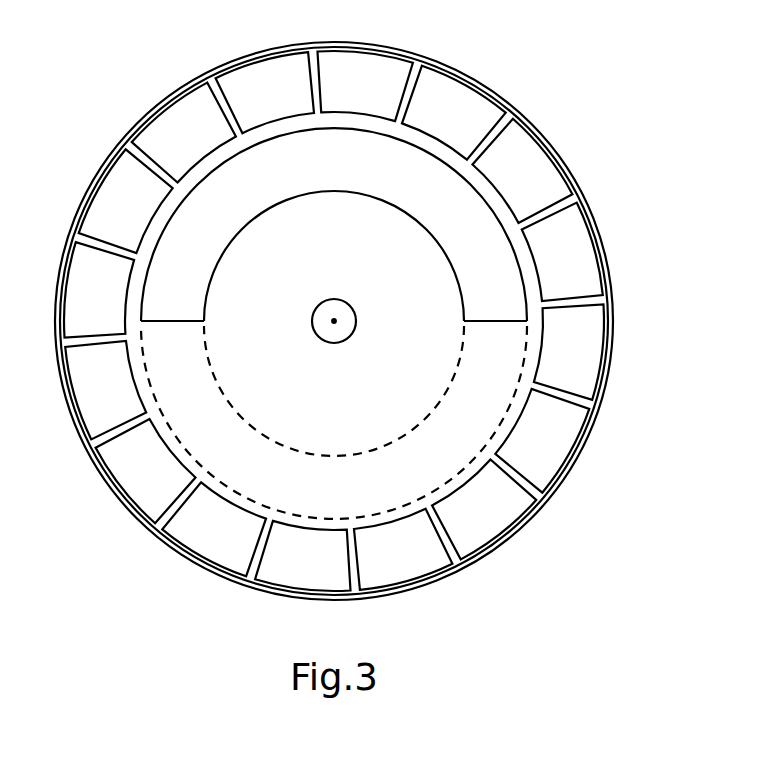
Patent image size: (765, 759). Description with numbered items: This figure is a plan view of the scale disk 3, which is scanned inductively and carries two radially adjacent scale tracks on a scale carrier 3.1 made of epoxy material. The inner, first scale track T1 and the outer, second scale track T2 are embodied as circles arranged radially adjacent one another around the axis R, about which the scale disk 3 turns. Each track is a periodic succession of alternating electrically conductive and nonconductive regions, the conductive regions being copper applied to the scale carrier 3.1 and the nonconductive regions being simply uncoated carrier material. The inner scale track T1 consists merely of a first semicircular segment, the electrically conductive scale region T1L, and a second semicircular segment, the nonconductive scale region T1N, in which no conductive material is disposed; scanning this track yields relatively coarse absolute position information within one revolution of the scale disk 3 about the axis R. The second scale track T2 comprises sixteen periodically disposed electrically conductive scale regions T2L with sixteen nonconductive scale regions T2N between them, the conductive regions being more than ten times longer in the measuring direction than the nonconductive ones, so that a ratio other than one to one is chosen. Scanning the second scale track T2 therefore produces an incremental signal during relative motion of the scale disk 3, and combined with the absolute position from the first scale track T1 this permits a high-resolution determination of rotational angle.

The scale disk 3 is at (355, 356).
The scale carrier 3.1 is at (598, 405).
The first scale track T1 is at (347, 277).
The electrically conductive scale region of the first scale track T1L is at (407, 165).
The nonconductive scale region of the first scale track T1N is at (279, 423).
The second scale track T2 is at (347, 295).
The electrically conductive scale region of the second scale track T2L is at (240, 75).
The nonconductive scale region of the second scale track T2N is at (170, 110).
The axis R is at (334, 321).